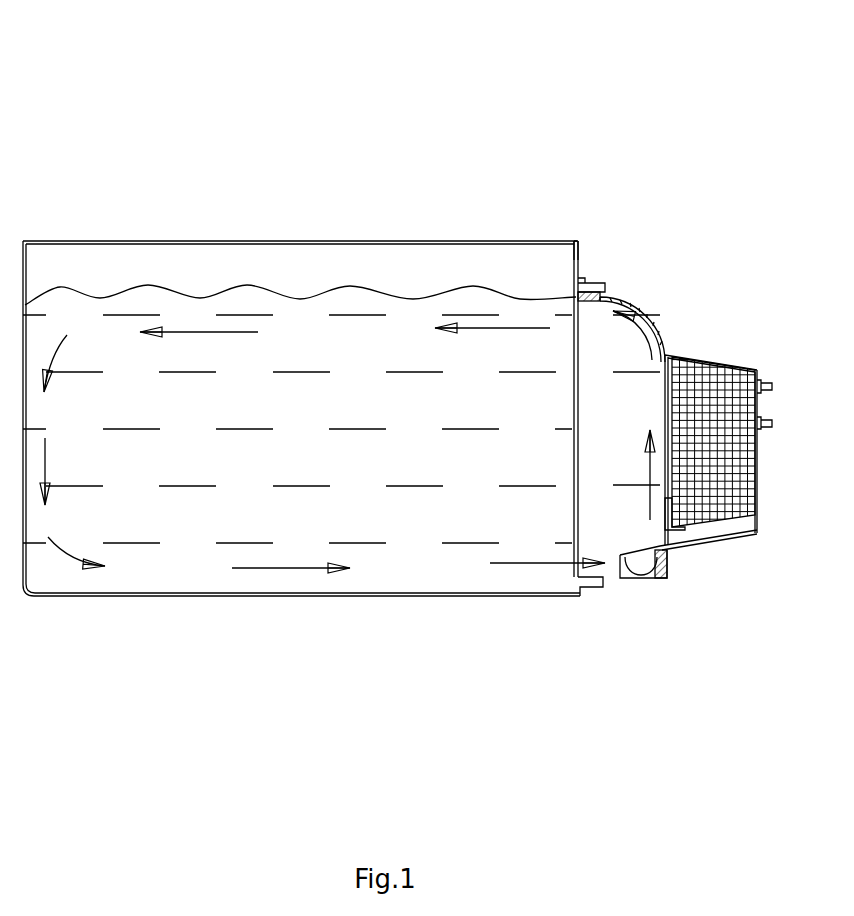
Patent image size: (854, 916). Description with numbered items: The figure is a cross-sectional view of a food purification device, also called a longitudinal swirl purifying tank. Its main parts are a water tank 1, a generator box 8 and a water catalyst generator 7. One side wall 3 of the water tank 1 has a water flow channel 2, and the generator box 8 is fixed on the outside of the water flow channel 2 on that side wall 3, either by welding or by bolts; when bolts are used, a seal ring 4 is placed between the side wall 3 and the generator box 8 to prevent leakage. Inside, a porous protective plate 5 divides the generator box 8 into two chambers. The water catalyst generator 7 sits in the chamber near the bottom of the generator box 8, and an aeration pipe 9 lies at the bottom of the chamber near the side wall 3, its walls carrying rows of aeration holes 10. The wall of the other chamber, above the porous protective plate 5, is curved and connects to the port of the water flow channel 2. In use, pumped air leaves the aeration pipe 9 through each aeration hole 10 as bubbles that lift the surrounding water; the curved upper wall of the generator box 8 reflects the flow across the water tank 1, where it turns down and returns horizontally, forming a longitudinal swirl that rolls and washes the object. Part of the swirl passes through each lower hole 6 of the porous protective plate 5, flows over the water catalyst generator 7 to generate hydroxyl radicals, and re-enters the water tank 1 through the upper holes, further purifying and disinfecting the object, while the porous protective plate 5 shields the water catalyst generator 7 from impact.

The water tank 1 is at (262, 262).
The water flow channel 2 is at (575, 350).
The side wall 3 is at (577, 240).
The seal ring 4 is at (579, 280).
The porous protective plate 5 is at (663, 353).
The hole 6 is at (667, 353).
The water catalyst generator 7 is at (713, 392).
The generator box 8 is at (735, 368).
The aeration pipe 9 is at (637, 566).
The aeration hole 10 is at (655, 563).